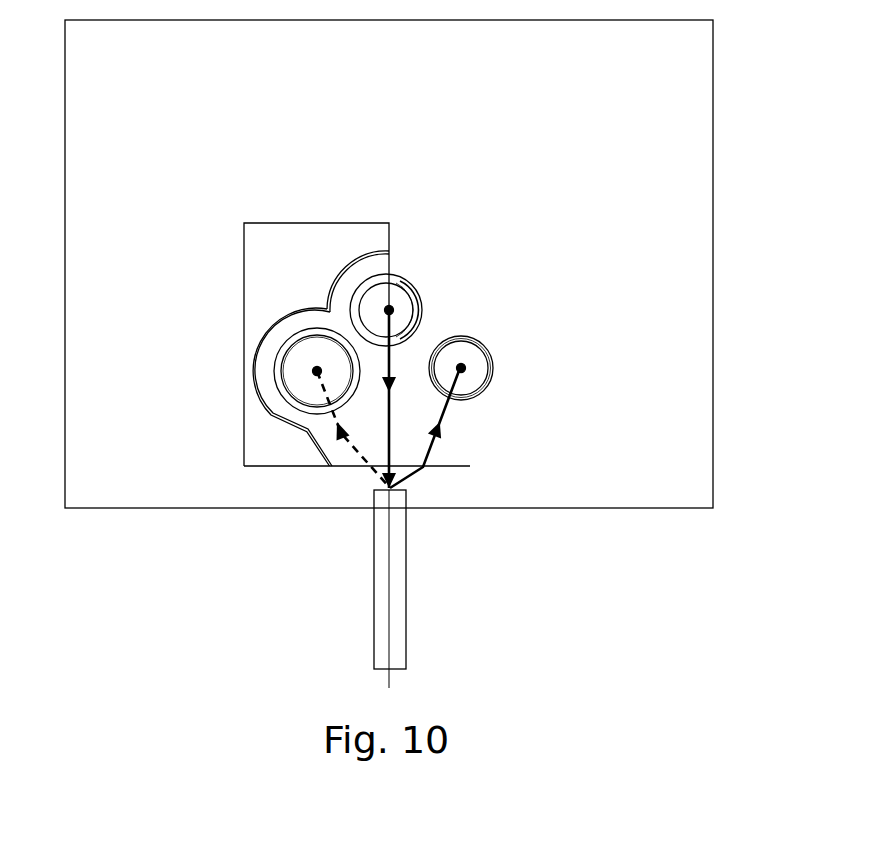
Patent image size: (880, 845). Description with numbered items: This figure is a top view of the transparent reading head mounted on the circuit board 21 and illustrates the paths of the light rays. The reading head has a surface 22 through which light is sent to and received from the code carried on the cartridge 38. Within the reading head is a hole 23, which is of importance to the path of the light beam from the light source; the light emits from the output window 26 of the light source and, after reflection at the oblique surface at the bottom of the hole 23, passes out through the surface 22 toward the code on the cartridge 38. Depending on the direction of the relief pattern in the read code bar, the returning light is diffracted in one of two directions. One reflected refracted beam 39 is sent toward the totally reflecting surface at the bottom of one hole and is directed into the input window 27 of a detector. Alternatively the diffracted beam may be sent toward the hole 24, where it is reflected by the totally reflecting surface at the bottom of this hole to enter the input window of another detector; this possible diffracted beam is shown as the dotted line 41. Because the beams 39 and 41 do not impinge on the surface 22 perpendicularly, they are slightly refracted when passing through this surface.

The circuit board 21 is at (712, 170).
The surface 22 is at (338, 466).
The hole 23 is at (367, 309).
The hole 24 is at (303, 360).
The output window 26 is at (402, 311).
The input window 27 is at (478, 363).
The cartridge 38 is at (397, 519).
The reflected refracted beam 39 is at (447, 413).
The dotted line 41 is at (337, 418).